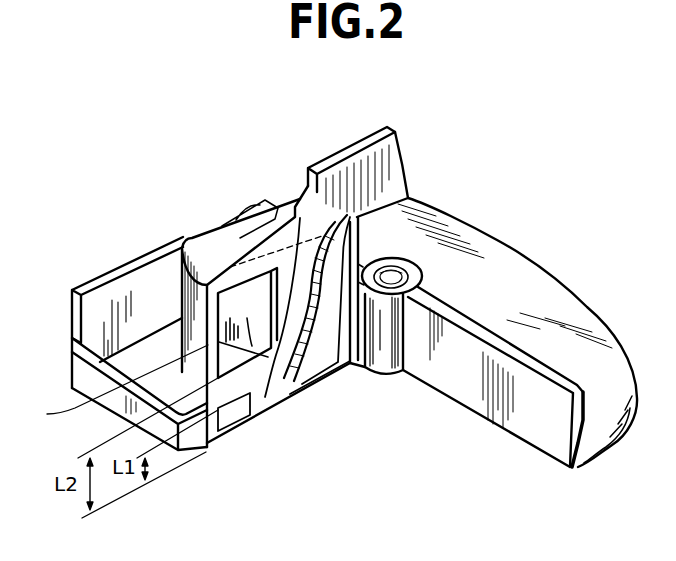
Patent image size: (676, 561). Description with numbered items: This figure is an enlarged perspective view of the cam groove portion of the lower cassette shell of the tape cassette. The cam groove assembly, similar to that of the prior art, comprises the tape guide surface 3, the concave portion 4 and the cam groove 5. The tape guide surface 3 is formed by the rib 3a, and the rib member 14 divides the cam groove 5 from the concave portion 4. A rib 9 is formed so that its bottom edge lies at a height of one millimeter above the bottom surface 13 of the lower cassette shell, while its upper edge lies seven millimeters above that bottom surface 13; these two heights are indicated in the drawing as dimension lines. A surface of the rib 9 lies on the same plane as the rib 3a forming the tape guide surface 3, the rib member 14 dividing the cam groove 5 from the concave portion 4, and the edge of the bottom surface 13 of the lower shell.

The tape guide surface 3 is at (178, 284).
The rib 3a is at (110, 387).
The concave portion 4 is at (238, 300).
The cam groove 5 is at (284, 374).
The rib 9 is at (235, 390).
The bottom surface 13 is at (227, 428).
The rib member 14 is at (283, 377).